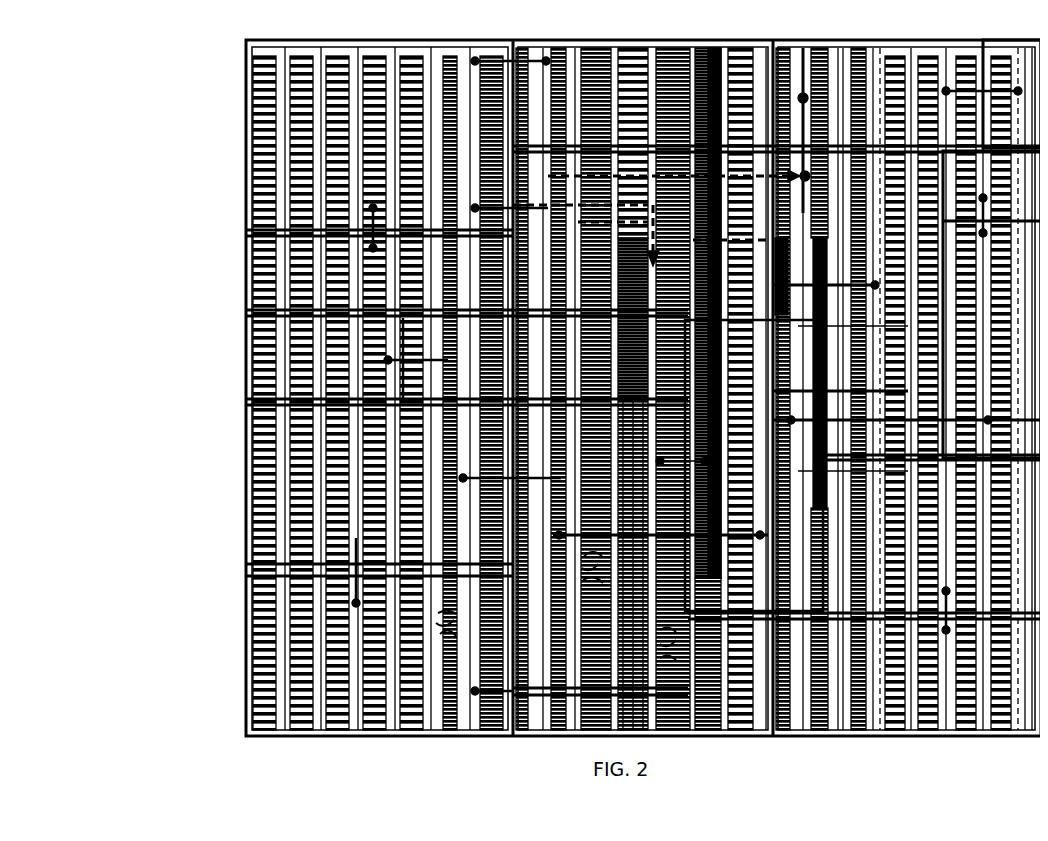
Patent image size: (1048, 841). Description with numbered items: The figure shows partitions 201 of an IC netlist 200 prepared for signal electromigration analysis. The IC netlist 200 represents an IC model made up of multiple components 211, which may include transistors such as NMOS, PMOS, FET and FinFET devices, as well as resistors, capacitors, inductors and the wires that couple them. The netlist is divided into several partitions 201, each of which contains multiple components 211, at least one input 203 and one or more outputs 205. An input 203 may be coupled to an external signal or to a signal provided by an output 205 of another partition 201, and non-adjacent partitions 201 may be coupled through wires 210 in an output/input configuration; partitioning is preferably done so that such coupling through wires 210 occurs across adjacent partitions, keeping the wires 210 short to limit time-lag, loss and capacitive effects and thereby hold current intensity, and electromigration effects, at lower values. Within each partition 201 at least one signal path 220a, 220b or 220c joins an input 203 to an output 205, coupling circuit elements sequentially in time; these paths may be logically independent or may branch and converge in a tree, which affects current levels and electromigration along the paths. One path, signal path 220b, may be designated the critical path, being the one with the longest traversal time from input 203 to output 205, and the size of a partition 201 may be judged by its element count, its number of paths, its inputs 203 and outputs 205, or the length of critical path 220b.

The IC netlist 200 is at (213, 20).
The partition 201 is at (388, 133).
The input 203 is at (238, 90).
The output 205 is at (464, 56).
The wire 210 is at (538, 53).
The component 211 is at (438, 626).
The signal path 220a is at (745, 180).
The signal path (critical path) 220b is at (740, 235).
The signal path 220c is at (602, 212).